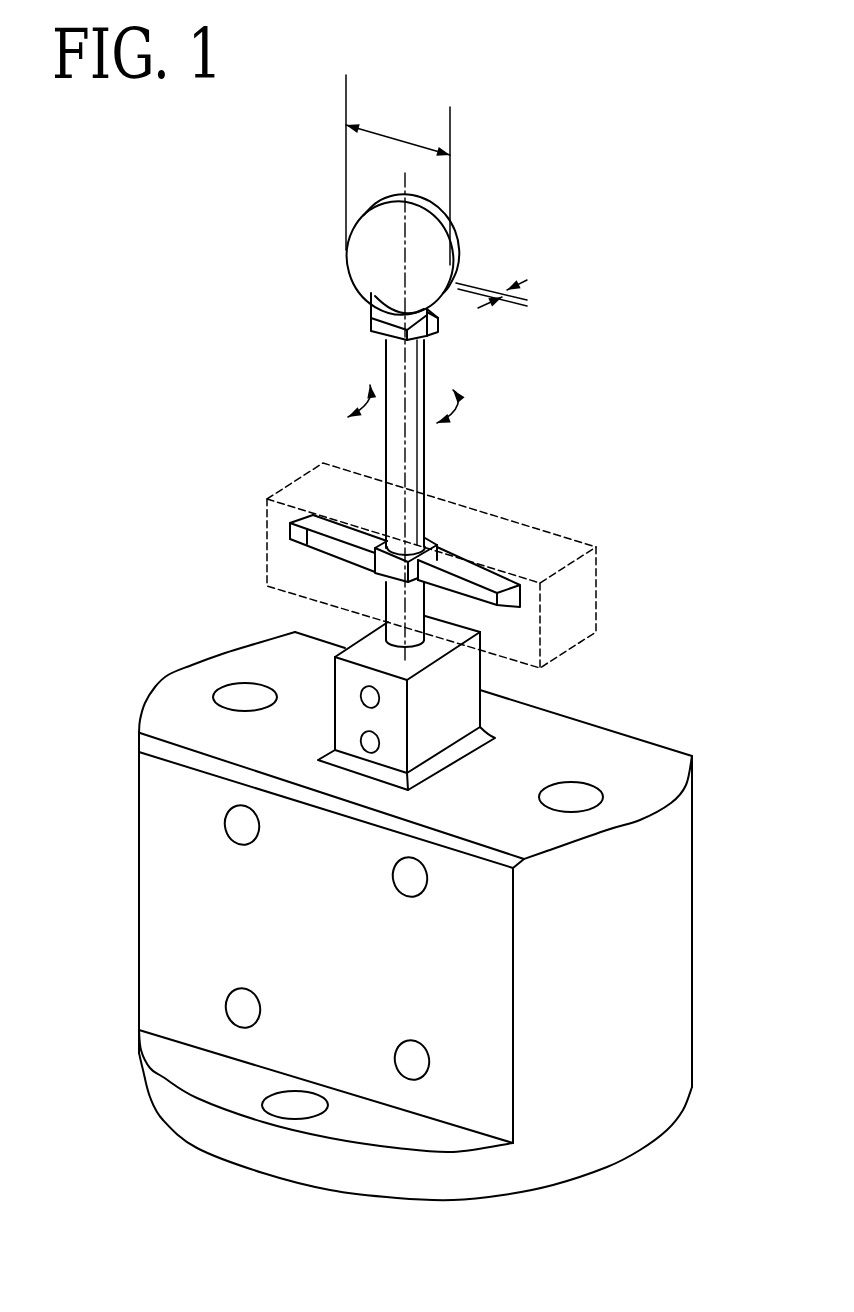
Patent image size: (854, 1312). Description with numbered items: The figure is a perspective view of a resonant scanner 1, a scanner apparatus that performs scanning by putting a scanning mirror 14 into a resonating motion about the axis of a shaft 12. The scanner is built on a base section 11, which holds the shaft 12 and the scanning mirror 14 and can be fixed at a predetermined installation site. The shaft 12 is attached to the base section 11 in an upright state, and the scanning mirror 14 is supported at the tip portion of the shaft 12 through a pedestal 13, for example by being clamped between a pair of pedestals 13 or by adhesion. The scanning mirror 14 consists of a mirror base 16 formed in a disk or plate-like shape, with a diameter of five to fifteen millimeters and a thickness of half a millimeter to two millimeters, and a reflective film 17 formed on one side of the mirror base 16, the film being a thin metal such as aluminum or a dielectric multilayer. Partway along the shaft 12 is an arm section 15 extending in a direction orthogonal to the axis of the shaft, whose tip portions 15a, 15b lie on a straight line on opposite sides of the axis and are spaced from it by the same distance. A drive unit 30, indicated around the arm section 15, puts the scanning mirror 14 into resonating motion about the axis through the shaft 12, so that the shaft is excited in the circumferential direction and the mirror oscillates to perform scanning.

The resonant scanner 1 is at (692, 268).
The base section 11 is at (680, 968).
The shaft 12 is at (413, 470).
The pedestal 13 is at (370, 325).
The scanning mirror 14 is at (459, 261).
The arm section 15 is at (434, 571).
The tip portion 15a is at (524, 600).
The tip portion 15b is at (293, 529).
The mirror base 16 is at (354, 290).
The reflective film 17 is at (366, 226).
The drive unit 30 is at (548, 521).